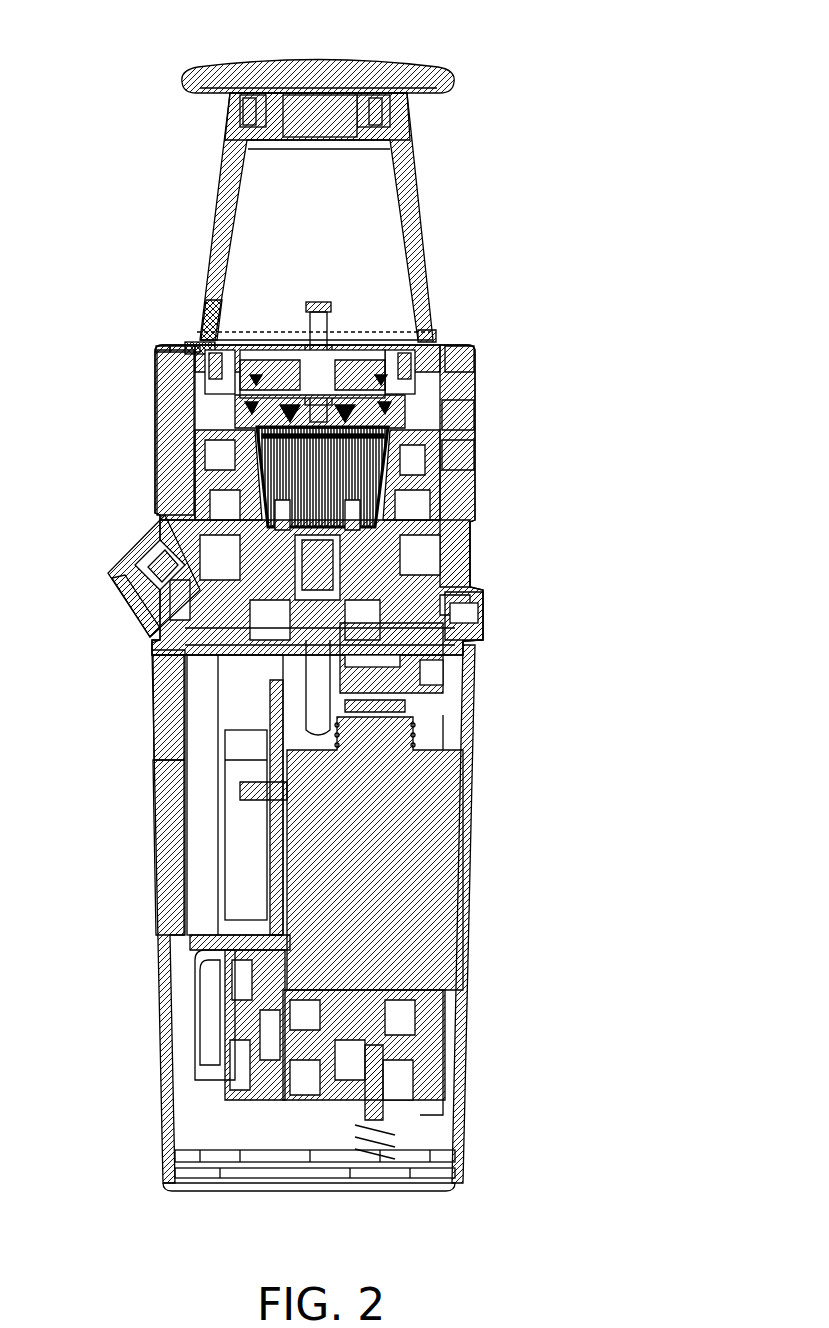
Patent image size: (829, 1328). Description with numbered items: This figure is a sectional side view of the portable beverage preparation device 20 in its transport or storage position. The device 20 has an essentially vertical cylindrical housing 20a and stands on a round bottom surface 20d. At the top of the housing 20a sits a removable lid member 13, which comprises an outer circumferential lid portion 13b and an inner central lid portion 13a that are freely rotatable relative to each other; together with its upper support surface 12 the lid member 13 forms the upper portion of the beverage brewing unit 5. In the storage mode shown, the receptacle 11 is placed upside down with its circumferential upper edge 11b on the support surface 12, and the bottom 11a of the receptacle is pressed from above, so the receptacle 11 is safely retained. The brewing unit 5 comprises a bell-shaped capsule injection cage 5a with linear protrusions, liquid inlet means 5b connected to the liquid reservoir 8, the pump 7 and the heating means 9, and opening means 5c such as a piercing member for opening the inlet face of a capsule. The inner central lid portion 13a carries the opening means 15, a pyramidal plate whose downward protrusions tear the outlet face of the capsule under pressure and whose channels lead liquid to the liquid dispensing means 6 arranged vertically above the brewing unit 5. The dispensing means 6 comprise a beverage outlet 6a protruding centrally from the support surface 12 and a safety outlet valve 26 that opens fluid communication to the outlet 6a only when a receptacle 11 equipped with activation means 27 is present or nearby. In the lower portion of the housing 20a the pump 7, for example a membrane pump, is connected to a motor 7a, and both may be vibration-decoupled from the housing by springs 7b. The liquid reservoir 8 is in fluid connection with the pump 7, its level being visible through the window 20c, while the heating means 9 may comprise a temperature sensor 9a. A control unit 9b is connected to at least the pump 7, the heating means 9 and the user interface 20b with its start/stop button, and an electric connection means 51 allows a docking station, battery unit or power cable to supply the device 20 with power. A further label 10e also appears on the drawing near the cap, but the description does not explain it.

The cap 10e is at (240, 75).
The pivot 27 is at (280, 88).
The neck top plate 11a is at (362, 88).
The device 20 is at (518, 103).
The neck housing 11 is at (418, 172).
The hinge portion 26 is at (212, 318).
The seal 12 is at (187, 340).
The shaft end 6a is at (310, 313).
The shaft 6 is at (330, 340).
The neck lower end 11b is at (430, 340).
The upper body edge 13a is at (158, 338).
The upper body lip 13b is at (182, 340).
The upper body 13 is at (148, 340).
The bearing holder 15 is at (470, 360).
The motor housing upper 5a is at (465, 417).
The motor housing portion 5c is at (462, 455).
The motor unit 5 is at (565, 345).
The side boss 20b is at (128, 540).
The motor housing lower 5b is at (130, 600).
The flange 51 is at (478, 618).
The lower housing upper part 20a is at (155, 663).
The spring 7b is at (417, 698).
The battery contact 9a is at (240, 787).
The lower housing wall 20c is at (163, 797).
The weight block 7a is at (450, 797).
The battery holder 8 is at (200, 853).
The battery 9 is at (247, 905).
The housing bottom 20d is at (197, 1190).
The drive mechanism 7 is at (273, 1102).
The bottom plate 9b is at (305, 1148).